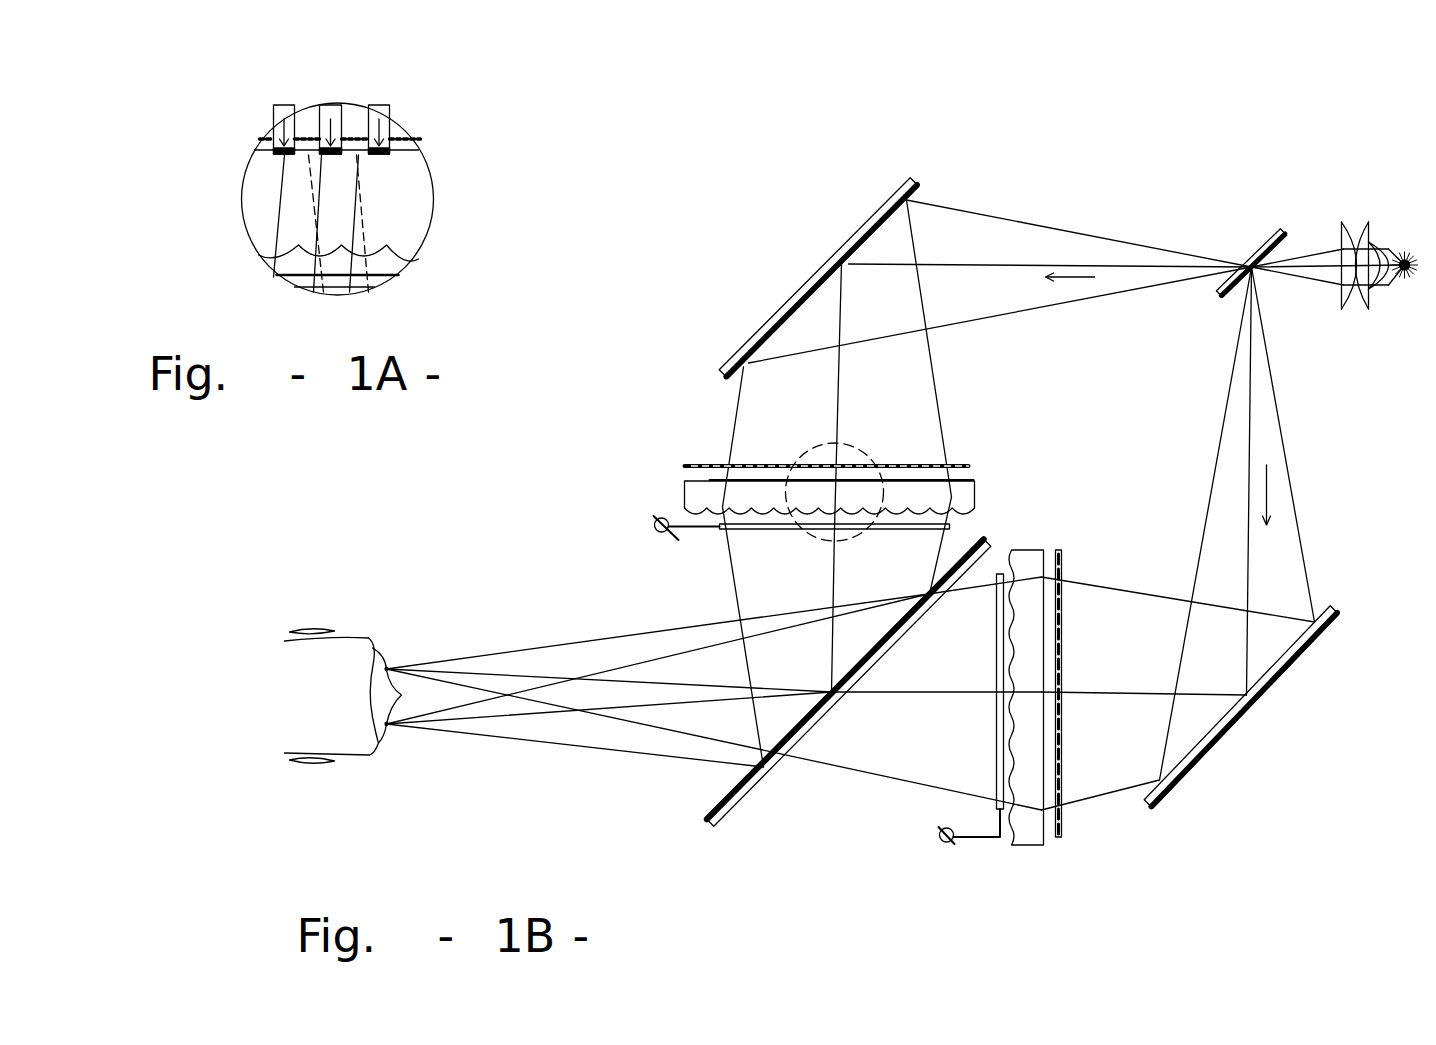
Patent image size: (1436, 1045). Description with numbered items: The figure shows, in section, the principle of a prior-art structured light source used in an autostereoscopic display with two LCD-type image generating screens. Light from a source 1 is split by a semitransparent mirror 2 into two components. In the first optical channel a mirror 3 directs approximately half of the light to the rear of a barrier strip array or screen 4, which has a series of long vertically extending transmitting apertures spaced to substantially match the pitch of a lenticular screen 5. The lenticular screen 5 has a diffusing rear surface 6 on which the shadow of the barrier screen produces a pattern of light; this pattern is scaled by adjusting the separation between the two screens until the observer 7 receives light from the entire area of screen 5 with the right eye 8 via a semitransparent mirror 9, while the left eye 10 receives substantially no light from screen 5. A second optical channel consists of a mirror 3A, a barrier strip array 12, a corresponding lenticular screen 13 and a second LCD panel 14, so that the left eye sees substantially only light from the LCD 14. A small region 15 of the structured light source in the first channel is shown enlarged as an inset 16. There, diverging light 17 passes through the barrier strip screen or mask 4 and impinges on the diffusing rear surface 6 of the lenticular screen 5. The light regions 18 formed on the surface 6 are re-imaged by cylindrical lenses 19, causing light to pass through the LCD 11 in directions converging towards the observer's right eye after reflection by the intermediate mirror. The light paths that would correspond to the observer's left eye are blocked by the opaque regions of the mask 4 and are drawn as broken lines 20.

In FIG. 1B, the source 1 is at (1402, 243).
In FIG. 1B, the semitransparent mirror 2 is at (1217, 278).
In FIG. 1B, the mirror 3 is at (832, 257).
In FIG. 1B, the mirror 3A is at (1230, 727).
In FIG. 1A, the barrier strip array 4 is at (400, 135).
In FIG. 1B, the barrier strip array 4 is at (963, 461).
In FIG. 1A, the lenticular screen 5 is at (263, 187).
In FIG. 1B, the lenticular screen 5 is at (973, 493).
In FIG. 1A, the diffusing rear surface 6 is at (402, 153).
In FIG. 1B, the diffusing rear surface 6 is at (708, 478).
In FIG. 1B, the observer 7 is at (347, 632).
In FIG. 1B, the right eye 8 is at (388, 727).
In FIG. 1B, the semitransparent mirror 9 is at (728, 792).
In FIG. 1B, the left eye 10 is at (388, 664).
In FIG. 1A, the LCD 11 is at (295, 280).
In FIG. 1B, the LCD 11 is at (755, 528).
In FIG. 1B, the barrier strip array 12 is at (1058, 822).
In FIG. 1B, the lenticular screen 13 is at (1027, 845).
In FIG. 1B, the second LCD panel 14 is at (993, 740).
In FIG. 1A, the small region 15 is at (425, 230).
In FIG. 1B, the small region 15 is at (847, 443).
In FIG. 1A, the inset 16 is at (243, 233).
In FIG. 1A, the diverging light 17 is at (387, 140).
In FIG. 1A, the light regions 18 is at (287, 155).
In FIG. 1A, the cylindrical lenses 19 is at (328, 257).
In FIG. 1A, the broken lines 20 is at (357, 207).